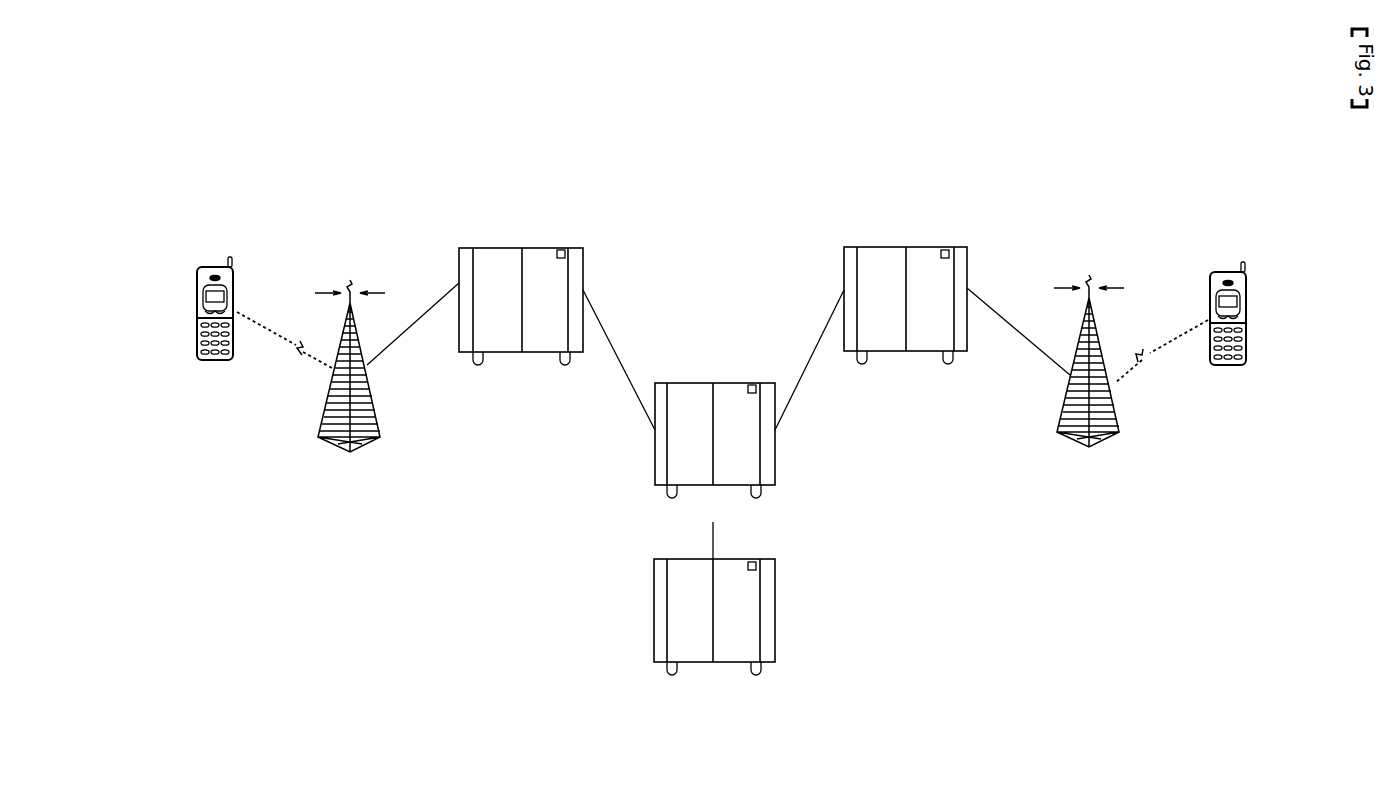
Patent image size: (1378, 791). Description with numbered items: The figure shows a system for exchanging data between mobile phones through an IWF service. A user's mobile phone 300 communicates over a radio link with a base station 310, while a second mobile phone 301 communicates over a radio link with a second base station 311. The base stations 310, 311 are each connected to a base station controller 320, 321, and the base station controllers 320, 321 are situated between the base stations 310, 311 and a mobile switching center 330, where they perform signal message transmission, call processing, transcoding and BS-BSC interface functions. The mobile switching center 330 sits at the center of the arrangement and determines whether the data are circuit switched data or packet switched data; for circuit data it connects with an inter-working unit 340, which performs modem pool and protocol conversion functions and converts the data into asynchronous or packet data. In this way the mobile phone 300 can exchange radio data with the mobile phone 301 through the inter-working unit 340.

The mobile phone 300 is at (233, 347).
The mobile phone 301 is at (1246, 290).
The base station 310 is at (375, 395).
The base station 311 is at (1115, 393).
The base station controller 320 is at (583, 260).
The base station controller 321 is at (967, 257).
The mobile switching center 330 is at (775, 447).
The inter-working unit 340 is at (775, 618).